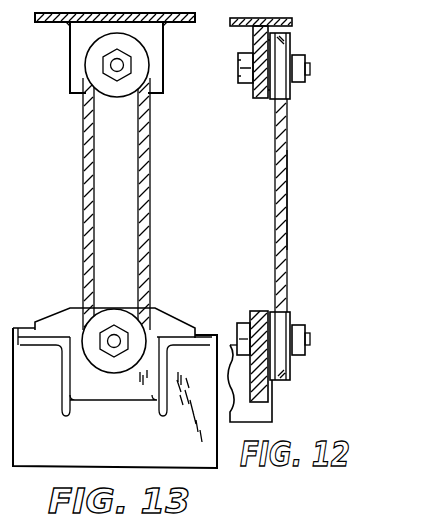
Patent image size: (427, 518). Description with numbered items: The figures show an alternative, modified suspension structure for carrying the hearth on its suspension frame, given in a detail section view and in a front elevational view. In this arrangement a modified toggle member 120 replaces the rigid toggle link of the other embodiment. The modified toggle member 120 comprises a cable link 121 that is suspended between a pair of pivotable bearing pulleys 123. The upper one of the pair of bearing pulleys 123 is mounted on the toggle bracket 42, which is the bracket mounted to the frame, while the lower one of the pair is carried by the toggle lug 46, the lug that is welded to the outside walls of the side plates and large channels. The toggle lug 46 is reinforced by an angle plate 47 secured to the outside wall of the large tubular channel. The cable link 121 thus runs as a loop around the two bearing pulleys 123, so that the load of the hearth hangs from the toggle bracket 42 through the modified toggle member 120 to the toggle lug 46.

In FIG. 13, the toggle bracket 42 is at (70, 40).
In FIG. 12, the toggle bracket 42 is at (278, 37).
In FIG. 13, the toggle lug 46 is at (100, 401).
In FIG. 12, the toggle lug 46 is at (276, 396).
In FIG. 13, the angle plate 47 is at (60, 381).
In FIG. 12, the angle plate 47 is at (276, 416).
In FIG. 13, the modified toggle member 120 is at (79, 196).
In FIG. 12, the modified toggle member 120 is at (273, 236).
In FIG. 13, the cable link 121 is at (150, 216).
In FIG. 12, the cable link 121 is at (288, 191).
In FIG. 13, the pivotable bearing pulley 123 is at (104, 100).
In FIG. 12, the pivotable bearing pulley 123 is at (288, 98).